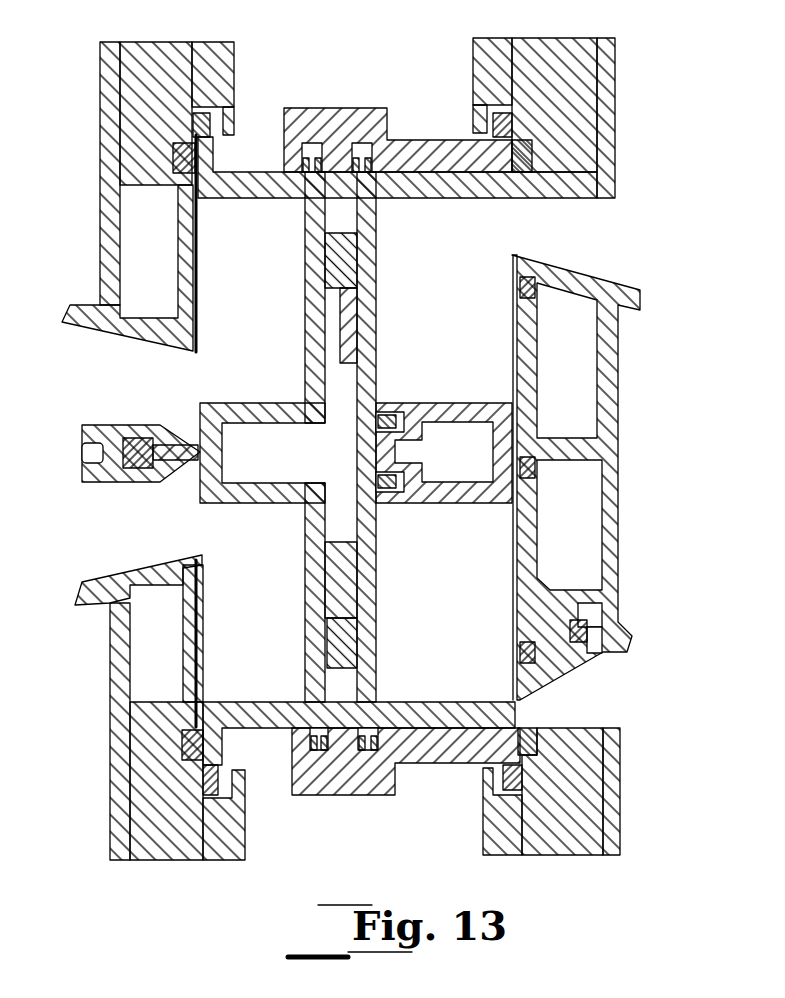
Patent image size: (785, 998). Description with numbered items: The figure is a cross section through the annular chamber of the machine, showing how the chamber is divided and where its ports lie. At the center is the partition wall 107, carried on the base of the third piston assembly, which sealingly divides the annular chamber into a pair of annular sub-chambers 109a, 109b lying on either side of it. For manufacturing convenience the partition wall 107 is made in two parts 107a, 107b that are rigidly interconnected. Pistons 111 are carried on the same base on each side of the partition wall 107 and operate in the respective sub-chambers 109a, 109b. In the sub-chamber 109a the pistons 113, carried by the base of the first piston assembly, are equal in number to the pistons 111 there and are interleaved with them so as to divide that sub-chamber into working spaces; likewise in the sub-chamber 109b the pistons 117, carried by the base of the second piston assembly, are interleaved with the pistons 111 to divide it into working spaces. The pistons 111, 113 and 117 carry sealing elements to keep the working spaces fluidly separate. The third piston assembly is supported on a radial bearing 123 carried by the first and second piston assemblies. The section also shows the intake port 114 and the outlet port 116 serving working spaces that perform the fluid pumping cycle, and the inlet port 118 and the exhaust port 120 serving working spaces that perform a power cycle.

The partition wall 107 is at (320, 437).
The part of partition wall 107a is at (305, 526).
The part of partition wall 107b is at (378, 548).
The sub-chamber 109a is at (239, 442).
The sub-chamber 109b is at (436, 614).
The pistons 111 is at (413, 200).
The pistons 113 is at (230, 715).
The intake port 114 is at (190, 373).
The outlet port 116 is at (172, 524).
The pistons 117 is at (445, 402).
The inlet port 118 is at (533, 712).
The exhaust port 120 is at (520, 228).
The radial bearing 123 is at (340, 197).